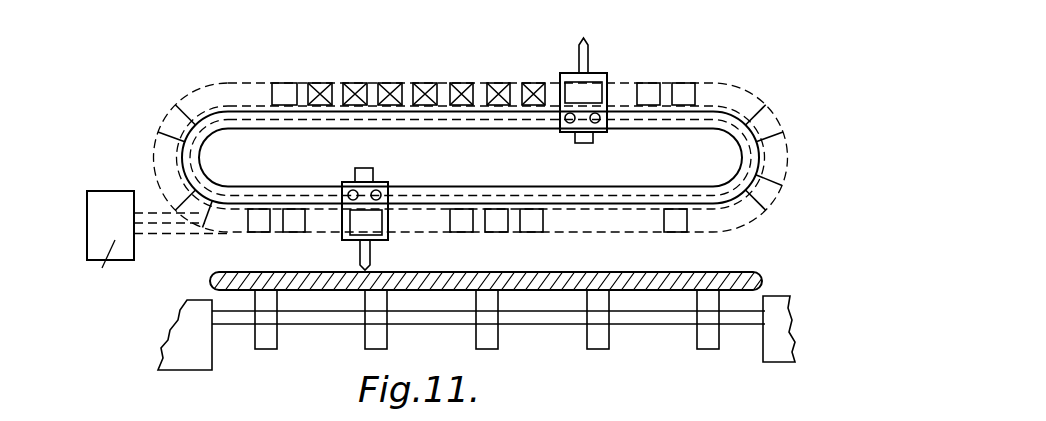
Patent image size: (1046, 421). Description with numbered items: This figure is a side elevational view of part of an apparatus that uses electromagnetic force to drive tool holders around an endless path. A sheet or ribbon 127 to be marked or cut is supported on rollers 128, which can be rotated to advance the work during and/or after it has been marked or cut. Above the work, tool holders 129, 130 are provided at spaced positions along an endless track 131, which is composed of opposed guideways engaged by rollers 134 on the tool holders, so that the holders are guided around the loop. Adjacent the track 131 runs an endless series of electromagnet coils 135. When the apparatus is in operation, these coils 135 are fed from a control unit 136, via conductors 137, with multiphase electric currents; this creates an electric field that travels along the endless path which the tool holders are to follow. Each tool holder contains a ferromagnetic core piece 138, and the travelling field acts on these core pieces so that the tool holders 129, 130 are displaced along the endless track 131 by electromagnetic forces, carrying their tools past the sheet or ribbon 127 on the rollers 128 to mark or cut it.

The sheet or ribbon 127 is at (687, 271).
The rollers 128 is at (691, 350).
The tool holder 129 is at (575, 94).
The tool holder 130 is at (381, 174).
The endless track 131 is at (670, 129).
The rollers 134 is at (590, 121).
The electromagnet coils 135 is at (420, 83).
The control unit 136 is at (110, 203).
The conductors 137 is at (158, 238).
The ferromagnetic core pieces 138 is at (582, 92).